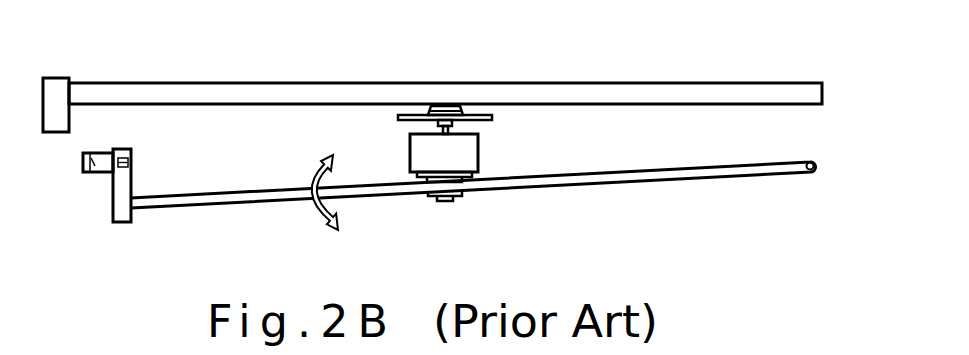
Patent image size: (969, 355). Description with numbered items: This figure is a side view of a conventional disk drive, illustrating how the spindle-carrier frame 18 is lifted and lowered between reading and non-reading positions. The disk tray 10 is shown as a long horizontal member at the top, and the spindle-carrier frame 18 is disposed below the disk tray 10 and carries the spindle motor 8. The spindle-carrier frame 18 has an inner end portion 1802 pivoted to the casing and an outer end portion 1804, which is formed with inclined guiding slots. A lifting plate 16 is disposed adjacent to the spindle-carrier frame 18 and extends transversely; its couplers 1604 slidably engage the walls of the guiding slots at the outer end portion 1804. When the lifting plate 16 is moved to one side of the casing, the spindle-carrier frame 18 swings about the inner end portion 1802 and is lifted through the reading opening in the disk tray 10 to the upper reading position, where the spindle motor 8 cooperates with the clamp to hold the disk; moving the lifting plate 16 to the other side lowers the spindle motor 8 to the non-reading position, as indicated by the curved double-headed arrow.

The disk tray 10 is at (623, 95).
The spindle motor 8 is at (476, 159).
The lifting plate 16 is at (89, 173).
The couplers 1604 is at (131, 160).
The outer end portion 1804 is at (122, 222).
The spindle-carrier frame 18 is at (628, 175).
The inner end portion 1802 is at (811, 171).